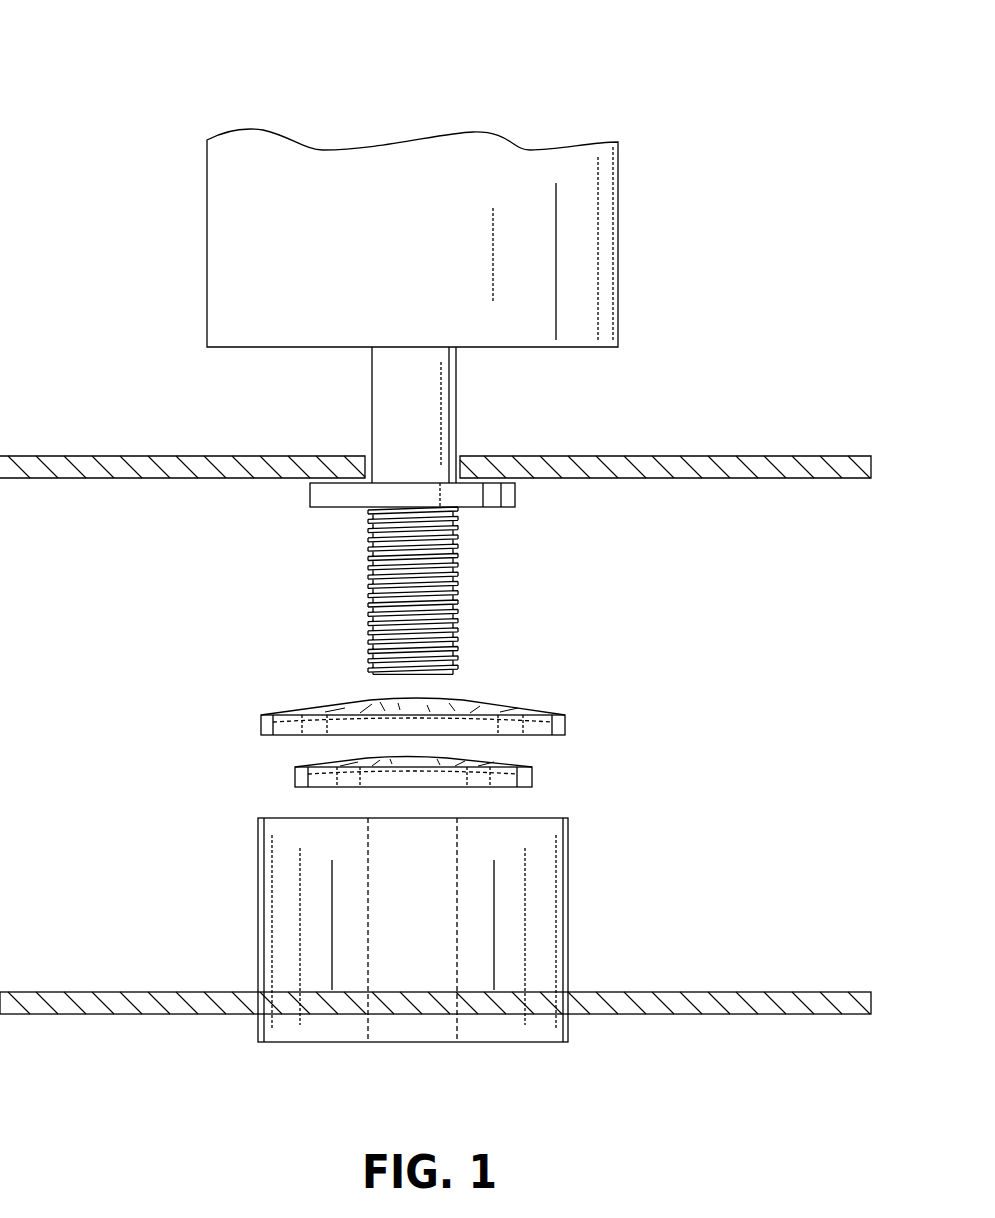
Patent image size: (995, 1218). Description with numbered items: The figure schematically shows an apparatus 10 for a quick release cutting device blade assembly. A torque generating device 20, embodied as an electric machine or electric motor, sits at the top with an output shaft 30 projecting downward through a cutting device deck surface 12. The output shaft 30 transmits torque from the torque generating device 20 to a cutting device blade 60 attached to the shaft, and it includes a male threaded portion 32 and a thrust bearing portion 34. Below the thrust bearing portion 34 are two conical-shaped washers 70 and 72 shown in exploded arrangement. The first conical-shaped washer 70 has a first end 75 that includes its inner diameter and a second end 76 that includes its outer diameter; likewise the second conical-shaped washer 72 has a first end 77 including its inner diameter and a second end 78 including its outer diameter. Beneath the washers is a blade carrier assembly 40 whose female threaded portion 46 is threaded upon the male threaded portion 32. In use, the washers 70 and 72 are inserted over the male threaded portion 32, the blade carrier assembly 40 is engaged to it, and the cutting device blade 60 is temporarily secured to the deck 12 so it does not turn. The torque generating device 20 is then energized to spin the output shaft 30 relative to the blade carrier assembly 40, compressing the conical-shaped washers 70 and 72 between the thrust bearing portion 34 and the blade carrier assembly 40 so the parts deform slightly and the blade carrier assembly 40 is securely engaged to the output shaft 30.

The apparatus 10 is at (118, 56).
The cutting device deck surface 12 is at (660, 456).
The torque generating device 20 is at (620, 258).
The output shaft 30 is at (432, 431).
The male threaded portion 32 is at (458, 596).
The thrust bearing portion 34 is at (510, 493).
The blade carrier assembly 40 is at (568, 930).
The female threaded portion 46 is at (457, 1020).
The cutting device blade 60 is at (618, 1014).
The first conical-shaped washer 70 is at (565, 718).
The second conical-shaped washer 72 is at (532, 777).
The first end of the first conical-shaped washer 75 is at (378, 700).
The second end of the first conical-shaped washer 76 is at (295, 732).
The first end of the second conical-shaped washer 77 is at (447, 758).
The second end of the second conical-shaped washer 78 is at (328, 787).